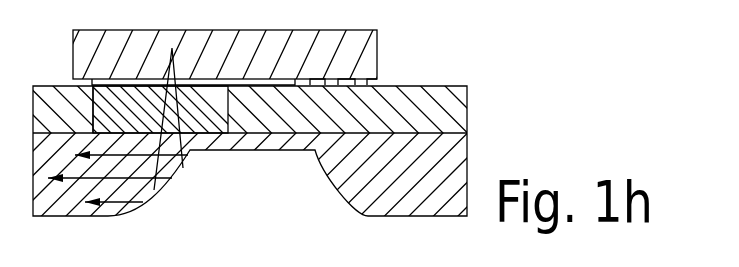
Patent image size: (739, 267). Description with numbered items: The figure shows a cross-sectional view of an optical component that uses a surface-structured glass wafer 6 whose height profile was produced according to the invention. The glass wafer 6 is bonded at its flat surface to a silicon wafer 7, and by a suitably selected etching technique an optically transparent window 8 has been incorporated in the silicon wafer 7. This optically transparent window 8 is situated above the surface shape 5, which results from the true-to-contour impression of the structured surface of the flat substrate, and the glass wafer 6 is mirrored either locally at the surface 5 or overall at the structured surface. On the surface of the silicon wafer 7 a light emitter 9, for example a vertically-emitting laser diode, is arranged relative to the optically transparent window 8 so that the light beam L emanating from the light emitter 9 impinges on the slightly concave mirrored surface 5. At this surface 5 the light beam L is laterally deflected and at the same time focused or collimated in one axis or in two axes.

The surface shape 5 is at (174, 192).
The glass wafer 6 is at (412, 198).
The silicon wafer 7 is at (412, 124).
The optically transparent window 8 is at (213, 123).
The light emitter 9 is at (360, 52).
The light beam L is at (75, 180).